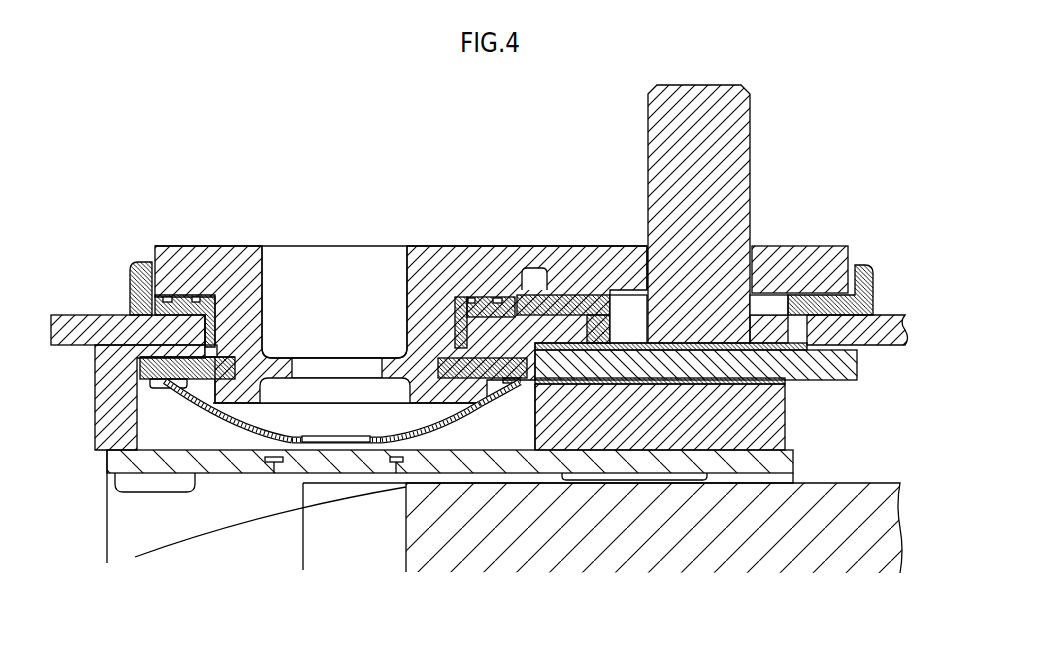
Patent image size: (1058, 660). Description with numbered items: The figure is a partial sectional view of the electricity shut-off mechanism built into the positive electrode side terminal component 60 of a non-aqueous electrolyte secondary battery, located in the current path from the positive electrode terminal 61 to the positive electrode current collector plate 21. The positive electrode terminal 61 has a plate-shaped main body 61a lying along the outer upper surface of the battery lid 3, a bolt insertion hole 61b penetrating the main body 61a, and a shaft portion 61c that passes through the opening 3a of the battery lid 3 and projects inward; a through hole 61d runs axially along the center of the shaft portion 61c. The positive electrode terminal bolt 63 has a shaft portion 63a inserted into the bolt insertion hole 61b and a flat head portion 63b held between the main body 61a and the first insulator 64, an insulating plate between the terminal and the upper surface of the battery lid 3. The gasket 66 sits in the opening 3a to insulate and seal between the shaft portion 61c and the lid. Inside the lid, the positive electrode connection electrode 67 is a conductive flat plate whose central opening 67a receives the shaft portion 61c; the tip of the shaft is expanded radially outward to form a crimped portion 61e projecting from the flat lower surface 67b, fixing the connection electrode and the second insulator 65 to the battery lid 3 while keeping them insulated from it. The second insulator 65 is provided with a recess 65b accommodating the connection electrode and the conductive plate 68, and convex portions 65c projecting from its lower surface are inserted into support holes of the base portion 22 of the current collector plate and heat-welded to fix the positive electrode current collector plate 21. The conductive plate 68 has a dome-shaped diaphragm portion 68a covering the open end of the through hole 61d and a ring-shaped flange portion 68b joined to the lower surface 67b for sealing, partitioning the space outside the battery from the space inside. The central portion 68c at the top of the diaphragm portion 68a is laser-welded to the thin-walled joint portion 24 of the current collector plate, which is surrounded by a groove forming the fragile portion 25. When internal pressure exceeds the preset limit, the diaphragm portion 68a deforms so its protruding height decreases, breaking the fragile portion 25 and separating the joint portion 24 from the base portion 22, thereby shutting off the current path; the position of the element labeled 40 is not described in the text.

The battery lid 3 is at (67, 315).
The opening of the battery lid 3a is at (223, 330).
The positive electrode current collector plate 21 is at (90, 556).
The base portion 22 is at (107, 465).
The joint portion 24 is at (333, 485).
The fragile portion 25 is at (273, 466).
The base 40 is at (889, 468).
The positive electrode side terminal component 60 is at (439, 190).
The positive electrode terminal 61 is at (465, 248).
The main body 61a is at (523, 248).
The bolt insertion hole 61b is at (648, 247).
The shaft portion 61c is at (457, 345).
The through hole 61d is at (337, 260).
The crimped portion 61e is at (207, 395).
The positive electrode terminal bolt 63 is at (750, 214).
The shaft portion of the bolt 63a is at (743, 155).
The head portion 63b is at (772, 318).
The first insulator 64 is at (138, 262).
The second insulator 65 is at (447, 357).
The recess 65b is at (527, 437).
The convex portion 65c is at (145, 490).
The gasket 66 is at (183, 296).
The positive electrode connection electrode 67 is at (147, 372).
The opening of the connection electrode 67a is at (240, 357).
The lower surface 67b is at (167, 390).
The conductive plate 68 is at (235, 441).
The diaphragm portion 68a is at (428, 440).
The flange portion 68b is at (515, 386).
The central portion 68c is at (362, 447).